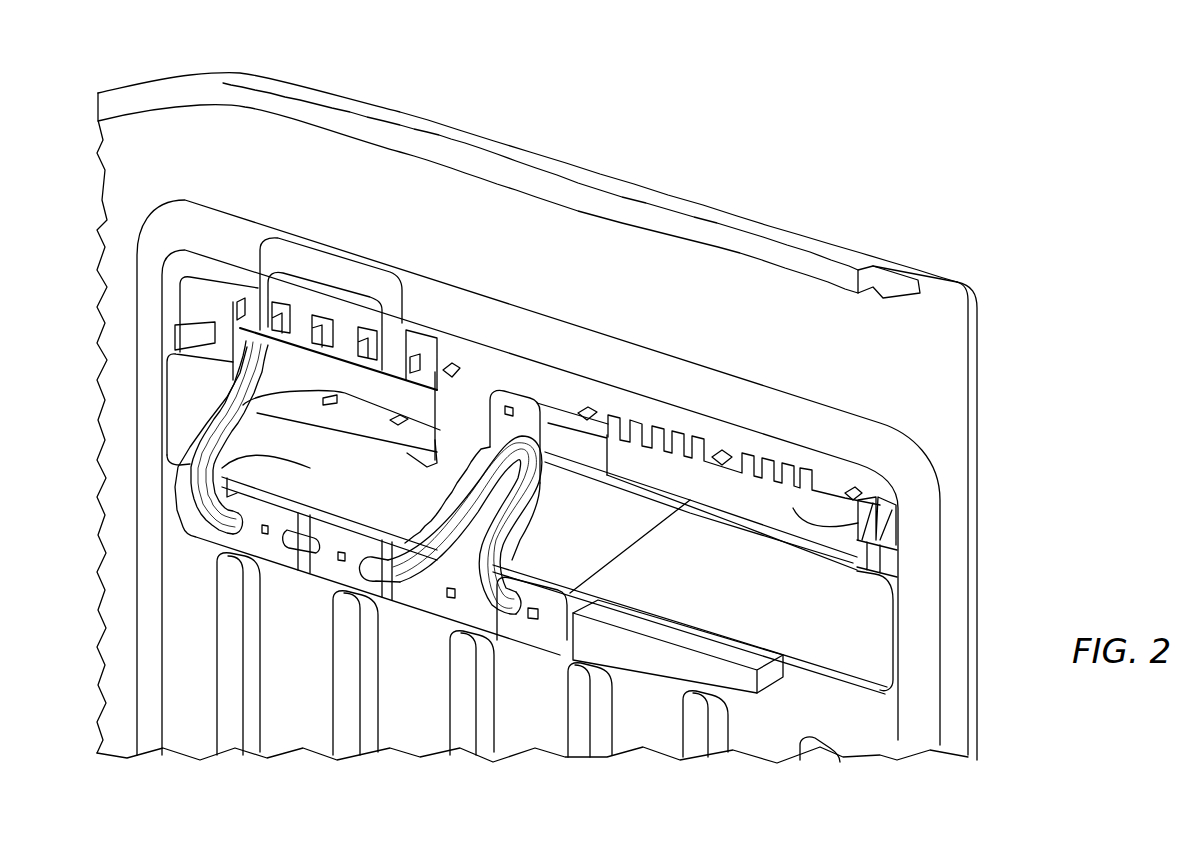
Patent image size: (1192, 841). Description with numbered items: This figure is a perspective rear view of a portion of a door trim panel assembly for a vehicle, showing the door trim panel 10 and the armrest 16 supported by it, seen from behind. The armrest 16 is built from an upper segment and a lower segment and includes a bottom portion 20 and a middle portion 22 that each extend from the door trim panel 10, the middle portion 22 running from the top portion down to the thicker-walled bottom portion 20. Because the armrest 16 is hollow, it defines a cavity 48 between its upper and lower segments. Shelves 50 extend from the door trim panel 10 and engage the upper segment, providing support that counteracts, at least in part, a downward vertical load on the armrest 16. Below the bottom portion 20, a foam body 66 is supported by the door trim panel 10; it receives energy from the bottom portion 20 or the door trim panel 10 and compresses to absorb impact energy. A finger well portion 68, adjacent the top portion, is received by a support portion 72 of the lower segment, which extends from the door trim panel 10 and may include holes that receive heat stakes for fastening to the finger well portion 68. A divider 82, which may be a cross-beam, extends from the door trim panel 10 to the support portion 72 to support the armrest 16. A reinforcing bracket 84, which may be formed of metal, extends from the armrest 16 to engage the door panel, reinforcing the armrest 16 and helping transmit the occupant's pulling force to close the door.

The door trim panel 10 is at (313, 668).
The armrest 16 is at (904, 616).
The bottom portion 20 is at (797, 614).
The middle portion 22 is at (843, 536).
The cavity 48 is at (667, 555).
The shelves 50 is at (643, 420).
The foam body 66 is at (697, 672).
The finger well portion 68 is at (373, 388).
The support portion 72 is at (220, 467).
The divider 82 is at (552, 395).
The reinforcing bracket 84 is at (437, 593).